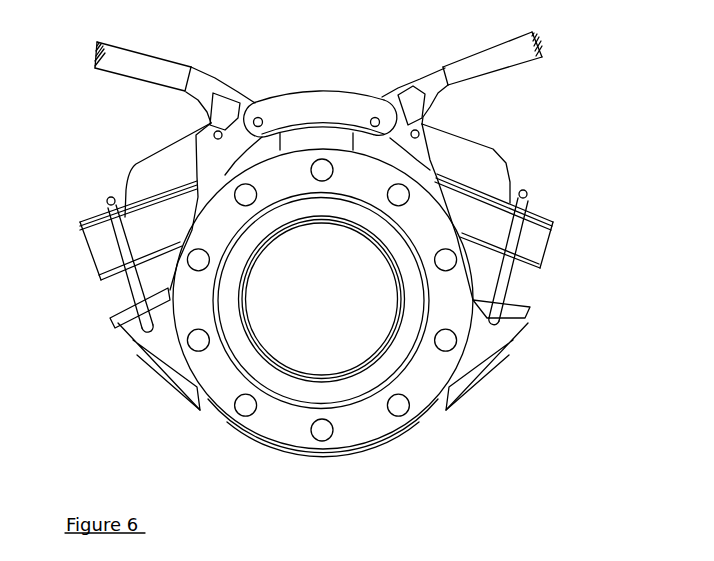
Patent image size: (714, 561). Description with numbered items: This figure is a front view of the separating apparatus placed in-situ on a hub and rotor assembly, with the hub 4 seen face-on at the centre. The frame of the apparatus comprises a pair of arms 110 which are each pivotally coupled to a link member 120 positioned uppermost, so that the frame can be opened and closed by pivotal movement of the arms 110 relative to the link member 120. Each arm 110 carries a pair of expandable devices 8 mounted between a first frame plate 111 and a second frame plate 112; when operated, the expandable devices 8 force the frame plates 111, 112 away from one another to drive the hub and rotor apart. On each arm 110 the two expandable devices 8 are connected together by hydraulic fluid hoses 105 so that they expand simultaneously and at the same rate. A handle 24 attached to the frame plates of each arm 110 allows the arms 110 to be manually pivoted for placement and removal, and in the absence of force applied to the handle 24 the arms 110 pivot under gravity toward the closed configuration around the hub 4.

The hub 4 is at (300, 440).
The expandable devices 8 is at (99, 289).
The handles 24 is at (177, 63).
The hydraulic fluid hoses 105 is at (110, 213).
The arms 110 is at (116, 388).
The first frame plate 111 is at (148, 158).
The second frame plate 112 is at (248, 438).
The link member 120 is at (318, 107).